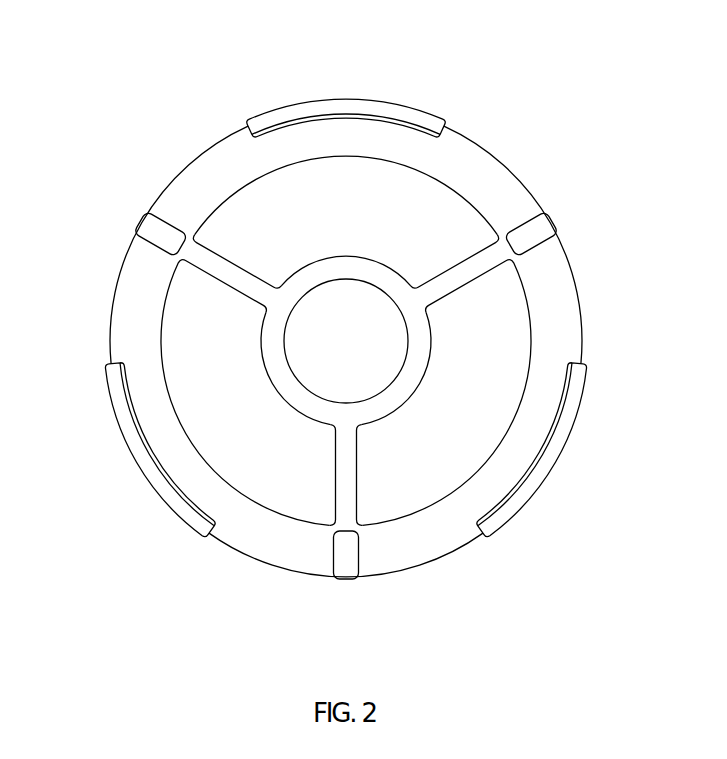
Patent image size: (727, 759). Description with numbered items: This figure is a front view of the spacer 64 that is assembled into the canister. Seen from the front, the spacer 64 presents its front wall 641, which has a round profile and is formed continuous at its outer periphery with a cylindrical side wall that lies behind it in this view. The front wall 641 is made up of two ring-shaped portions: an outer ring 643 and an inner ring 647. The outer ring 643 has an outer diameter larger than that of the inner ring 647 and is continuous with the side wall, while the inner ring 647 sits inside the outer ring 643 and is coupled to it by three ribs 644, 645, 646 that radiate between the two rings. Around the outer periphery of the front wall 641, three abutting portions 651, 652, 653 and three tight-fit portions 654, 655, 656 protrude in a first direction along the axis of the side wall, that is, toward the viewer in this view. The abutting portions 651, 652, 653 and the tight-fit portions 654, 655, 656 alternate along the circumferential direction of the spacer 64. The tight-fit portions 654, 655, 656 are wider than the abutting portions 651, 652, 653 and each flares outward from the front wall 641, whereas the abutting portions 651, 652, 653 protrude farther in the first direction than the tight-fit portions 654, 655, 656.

The spacer 64 is at (112, 165).
The front wall 641 is at (235, 157).
The outer ring 643 is at (187, 210).
The rib 644 is at (232, 273).
The rib 645 is at (345, 475).
The rib 646 is at (465, 270).
The inner ring 647 is at (370, 272).
The abutting portion 651 is at (158, 228).
The abutting portion 652 is at (345, 563).
The abutting portion 653 is at (543, 222).
The tight-fit portion 654 is at (135, 447).
The tight-fit portion 655 is at (560, 445).
The tight-fit portion 656 is at (365, 107).